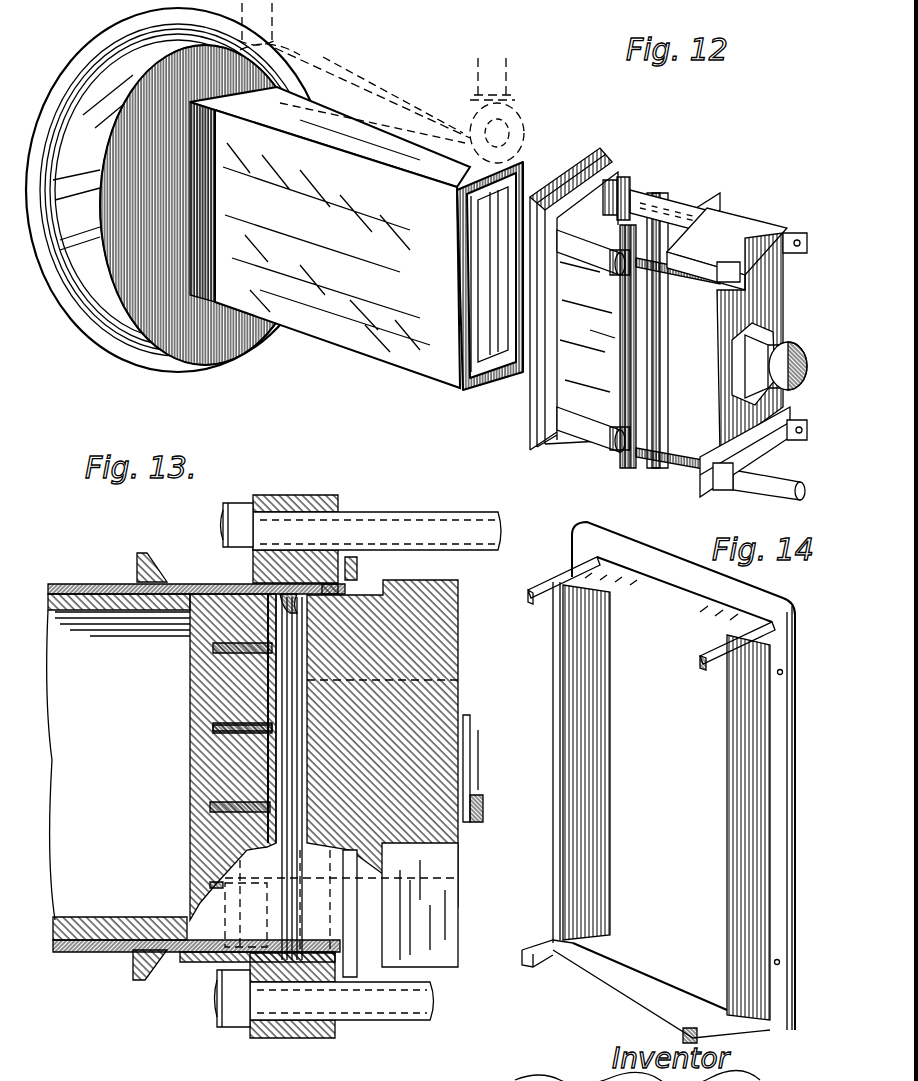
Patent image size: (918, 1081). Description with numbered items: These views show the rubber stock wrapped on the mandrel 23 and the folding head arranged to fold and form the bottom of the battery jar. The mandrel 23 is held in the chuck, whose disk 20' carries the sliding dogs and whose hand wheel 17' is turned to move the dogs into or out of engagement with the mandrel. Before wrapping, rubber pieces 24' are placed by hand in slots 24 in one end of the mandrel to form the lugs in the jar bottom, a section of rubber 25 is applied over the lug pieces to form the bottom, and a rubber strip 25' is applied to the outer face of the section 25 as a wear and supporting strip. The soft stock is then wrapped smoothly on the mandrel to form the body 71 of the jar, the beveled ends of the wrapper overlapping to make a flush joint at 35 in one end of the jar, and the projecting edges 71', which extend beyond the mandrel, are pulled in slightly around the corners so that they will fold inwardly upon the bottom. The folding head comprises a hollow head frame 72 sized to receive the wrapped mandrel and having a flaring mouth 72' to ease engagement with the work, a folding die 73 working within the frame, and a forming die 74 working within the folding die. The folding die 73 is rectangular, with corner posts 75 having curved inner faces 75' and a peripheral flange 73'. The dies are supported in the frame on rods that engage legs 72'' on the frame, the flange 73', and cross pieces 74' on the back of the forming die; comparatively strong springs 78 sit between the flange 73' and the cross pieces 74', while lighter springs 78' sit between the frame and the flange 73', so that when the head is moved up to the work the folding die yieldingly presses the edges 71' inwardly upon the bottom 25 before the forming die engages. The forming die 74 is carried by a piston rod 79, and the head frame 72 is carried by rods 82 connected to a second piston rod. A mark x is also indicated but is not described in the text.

In FIG. 12, the hand wheel 17' is at (178, 190).
In FIG. 12, the disk 20' is at (312, 203).
In FIG. 12, the mandrel 23 is at (212, 105).
In FIG. 13, the mandrel 23 is at (161, 757).
In FIG. 12, the reference point x is at (240, 102).
In FIG. 13, the slots 24 is at (206, 765).
In FIG. 13, the rubber pieces 24' is at (207, 784).
In FIG. 12, the section of rubber 25 is at (444, 284).
In FIG. 13, the section of rubber 25 is at (266, 777).
In FIG. 12, the rubber strip 25' is at (456, 272).
In FIG. 13, the rubber strip 25' is at (321, 612).
In FIG. 12, the joint 35 is at (406, 146).
In FIG. 12, the body 71 is at (330, 222).
In FIG. 12, the projecting edges 71' is at (469, 292).
In FIG. 12, the head frame 72 is at (587, 321).
In FIG. 13, the head frame 72 is at (196, 751).
In FIG. 12, the flaring mouth 72' is at (575, 285).
In FIG. 13, the flaring mouth 72' is at (148, 750).
In FIG. 12, the legs 72'' is at (591, 341).
In FIG. 13, the folding die 73 is at (294, 766).
In FIG. 14, the folding die 73 is at (658, 780).
In FIG. 12, the peripheral flange 73' is at (681, 309).
In FIG. 13, the peripheral flange 73' is at (381, 568).
In FIG. 14, the peripheral flange 73' is at (665, 532).
In FIG. 12, the forming die 74 is at (737, 317).
In FIG. 13, the forming die 74 is at (366, 778).
In FIG. 12, the cross pieces 74' is at (758, 377).
In FIG. 13, the corner posts 75 is at (319, 574).
In FIG. 14, the corner posts 75 is at (647, 799).
In FIG. 14, the curved inner faces 75' is at (601, 819).
In FIG. 12, the springs 78 is at (678, 383).
In FIG. 12, the lighter springs 78' is at (616, 369).
In FIG. 12, the piston rod 79 is at (779, 357).
In FIG. 13, the piston rod 79 is at (482, 780).
In FIG. 12, the rods 82 is at (672, 200).
In FIG. 13, the rods 82 is at (410, 512).